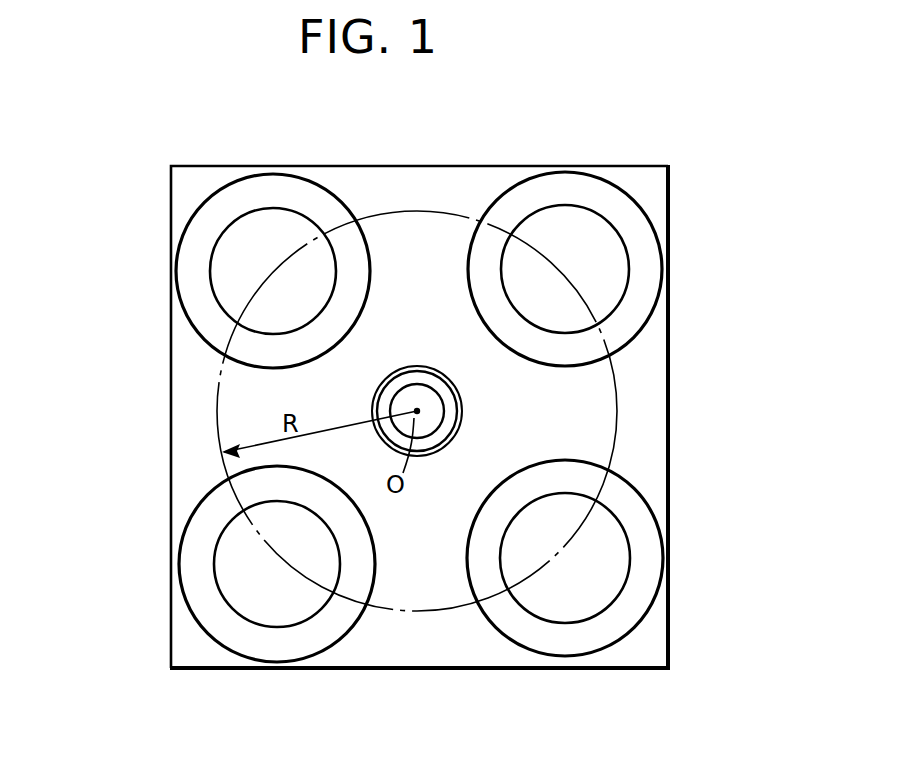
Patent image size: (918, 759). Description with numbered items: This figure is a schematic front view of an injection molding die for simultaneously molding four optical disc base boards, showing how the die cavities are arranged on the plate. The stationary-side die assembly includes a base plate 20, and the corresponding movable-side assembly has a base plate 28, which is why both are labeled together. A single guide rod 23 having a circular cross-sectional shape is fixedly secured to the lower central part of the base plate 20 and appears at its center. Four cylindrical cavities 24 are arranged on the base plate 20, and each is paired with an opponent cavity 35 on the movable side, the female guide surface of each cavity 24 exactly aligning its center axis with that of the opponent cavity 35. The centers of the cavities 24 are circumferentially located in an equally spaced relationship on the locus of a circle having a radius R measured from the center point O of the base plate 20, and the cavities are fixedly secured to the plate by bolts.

The base plate 20 is at (485, 416).
The base plate 28 is at (655, 402).
The cavity 35 is at (421, 417).
The cylindrical cavity 24 is at (183, 541).
The guide rod 23 is at (448, 408).